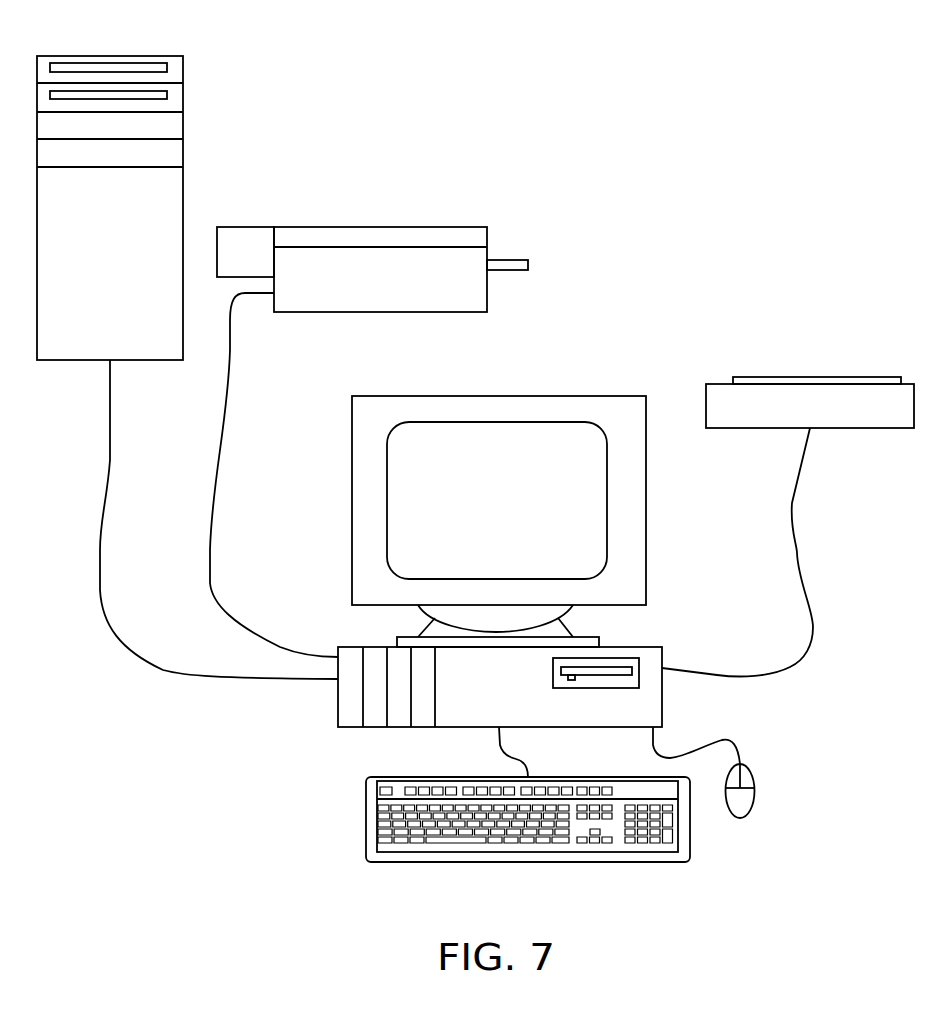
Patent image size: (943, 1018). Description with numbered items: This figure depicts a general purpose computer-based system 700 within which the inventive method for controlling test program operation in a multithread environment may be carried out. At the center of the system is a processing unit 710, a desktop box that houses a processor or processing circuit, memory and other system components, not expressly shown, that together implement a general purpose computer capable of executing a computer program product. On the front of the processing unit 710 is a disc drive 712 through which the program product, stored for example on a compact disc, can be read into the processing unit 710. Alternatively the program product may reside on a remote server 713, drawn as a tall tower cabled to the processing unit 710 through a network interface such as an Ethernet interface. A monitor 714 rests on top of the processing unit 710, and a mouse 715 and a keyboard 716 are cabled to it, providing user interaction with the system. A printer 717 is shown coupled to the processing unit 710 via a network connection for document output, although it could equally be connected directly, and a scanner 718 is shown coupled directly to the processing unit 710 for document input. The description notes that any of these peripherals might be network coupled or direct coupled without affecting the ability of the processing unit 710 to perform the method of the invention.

The computer-based system 700 is at (641, 135).
The processing unit 710 is at (338, 707).
The floppy disk drive 712 is at (632, 671).
The tower / external storage unit 713 is at (183, 199).
The monitor display 714 is at (590, 396).
The mouse 715 is at (753, 798).
The keyboard 716 is at (366, 820).
The external drive / scanner 717 is at (435, 227).
The peripheral device / modem 718 is at (843, 377).